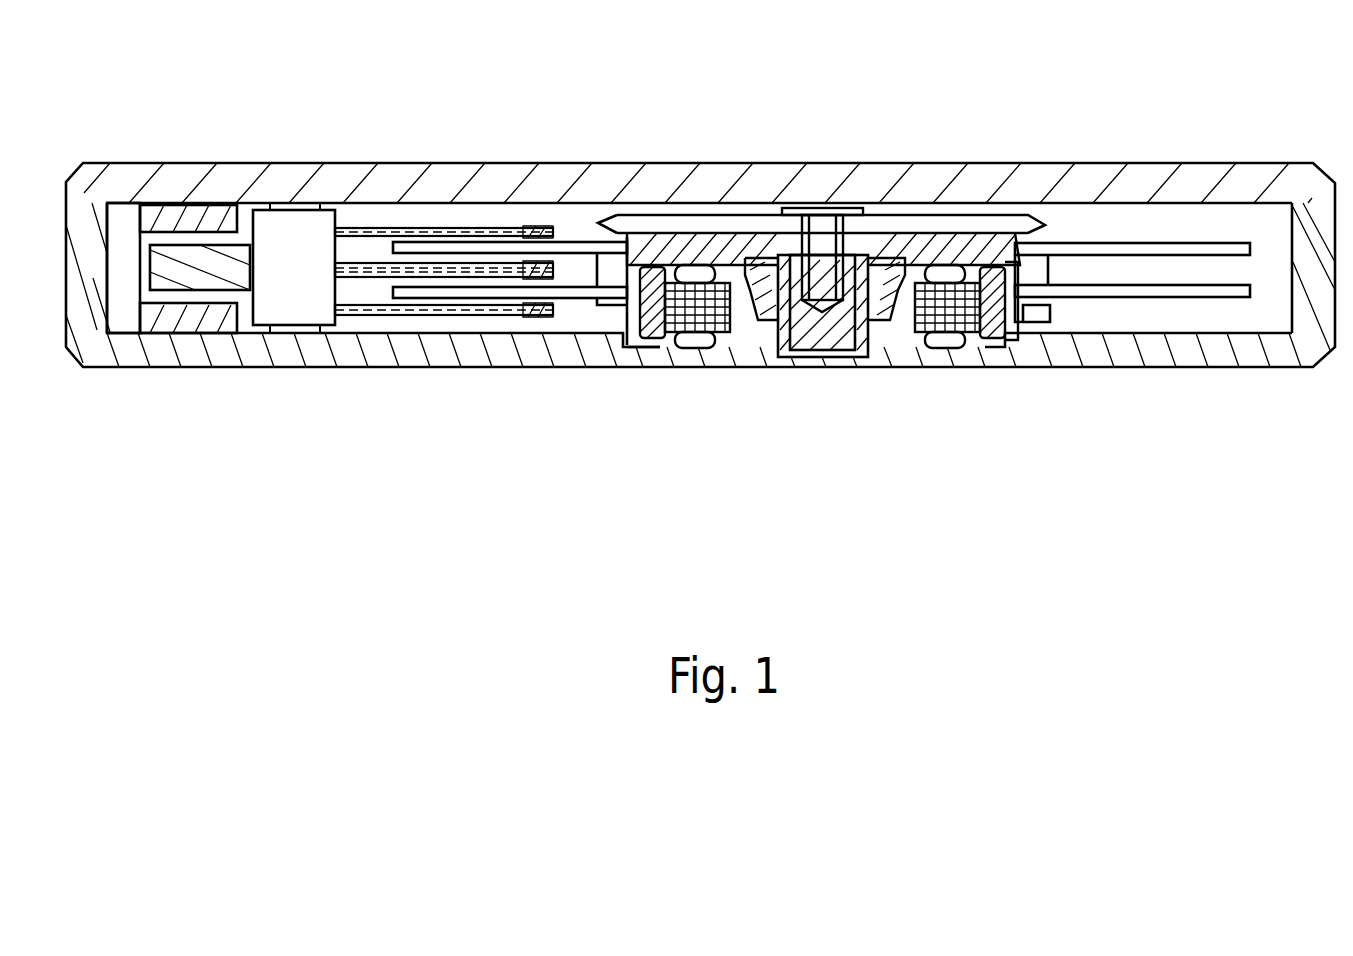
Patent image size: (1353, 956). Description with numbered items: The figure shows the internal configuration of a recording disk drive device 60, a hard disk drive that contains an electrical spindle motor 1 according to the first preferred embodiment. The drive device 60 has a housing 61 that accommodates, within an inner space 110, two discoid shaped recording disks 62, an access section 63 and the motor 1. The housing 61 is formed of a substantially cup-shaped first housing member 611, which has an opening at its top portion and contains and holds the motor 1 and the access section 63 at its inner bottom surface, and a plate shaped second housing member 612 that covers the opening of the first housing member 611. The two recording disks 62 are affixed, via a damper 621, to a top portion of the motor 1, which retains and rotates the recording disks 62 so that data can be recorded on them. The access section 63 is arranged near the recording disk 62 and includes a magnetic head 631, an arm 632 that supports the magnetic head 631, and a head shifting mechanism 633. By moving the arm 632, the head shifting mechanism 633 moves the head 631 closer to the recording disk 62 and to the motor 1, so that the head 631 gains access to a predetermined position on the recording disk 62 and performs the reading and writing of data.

The electrical spindle motor 1 is at (842, 216).
The recording disk drive device 60 is at (703, 298).
The housing 61 is at (703, 298).
The inner space 110 is at (1219, 212).
The first housing member 611 is at (1158, 350).
The second housing member 612 is at (1265, 193).
The recording disk 62 is at (1117, 243).
The damper 621 is at (1022, 210).
The access section 63 is at (383, 331).
The magnetic head 631 is at (563, 242).
The arm 632 is at (420, 230).
The head shifting mechanism 633 is at (297, 310).